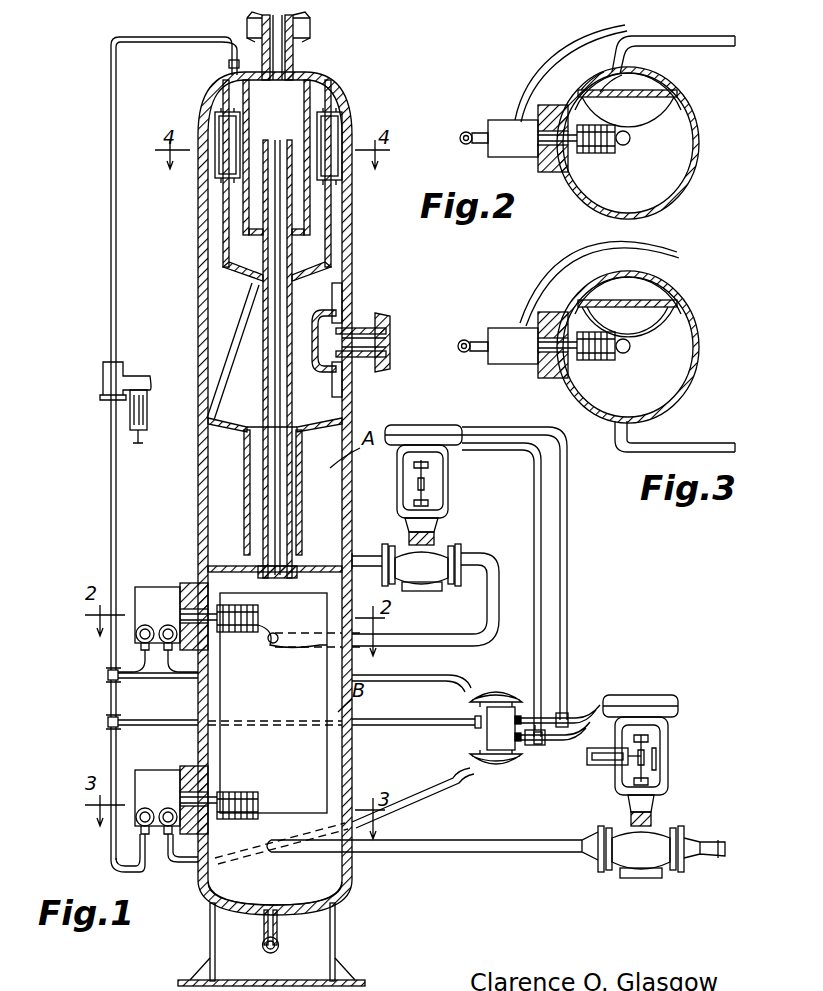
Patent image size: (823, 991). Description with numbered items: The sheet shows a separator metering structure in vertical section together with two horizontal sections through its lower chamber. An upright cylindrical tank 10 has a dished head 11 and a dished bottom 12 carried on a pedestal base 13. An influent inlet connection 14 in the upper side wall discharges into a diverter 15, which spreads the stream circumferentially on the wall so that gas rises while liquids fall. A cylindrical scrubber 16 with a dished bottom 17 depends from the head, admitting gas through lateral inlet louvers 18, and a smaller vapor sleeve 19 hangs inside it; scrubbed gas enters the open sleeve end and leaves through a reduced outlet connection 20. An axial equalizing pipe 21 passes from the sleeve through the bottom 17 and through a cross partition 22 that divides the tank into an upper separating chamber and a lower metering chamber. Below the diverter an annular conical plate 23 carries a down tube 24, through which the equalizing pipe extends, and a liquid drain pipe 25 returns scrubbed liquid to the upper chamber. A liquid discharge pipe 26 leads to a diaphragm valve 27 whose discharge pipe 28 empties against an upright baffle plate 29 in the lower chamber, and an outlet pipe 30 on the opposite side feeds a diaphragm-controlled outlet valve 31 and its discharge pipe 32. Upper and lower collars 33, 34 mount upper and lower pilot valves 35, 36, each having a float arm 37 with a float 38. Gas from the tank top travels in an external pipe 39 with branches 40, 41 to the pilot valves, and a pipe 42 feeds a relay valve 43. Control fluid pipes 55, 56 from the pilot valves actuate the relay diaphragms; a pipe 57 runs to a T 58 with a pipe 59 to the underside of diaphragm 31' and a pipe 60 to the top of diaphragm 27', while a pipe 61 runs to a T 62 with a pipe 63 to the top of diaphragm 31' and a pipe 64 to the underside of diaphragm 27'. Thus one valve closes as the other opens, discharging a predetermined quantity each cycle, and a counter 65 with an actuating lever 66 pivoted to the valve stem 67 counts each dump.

In FIG. 1, the tank 10 is at (345, 305).
In FIG. 2, the tank 10 is at (700, 132).
In FIG. 3, the tank 10 is at (700, 340).
In FIG. 1, the head 11 is at (318, 79).
In FIG. 1, the bottom 12 is at (230, 905).
In FIG. 2, the bottom 12 is at (672, 172).
In FIG. 3, the bottom 12 is at (680, 364).
In FIG. 1, the base 13 is at (337, 932).
In FIG. 1, the influent inlet connection 14 is at (383, 343).
In FIG. 1, the diverter 15 is at (313, 362).
In FIG. 1, the scrubber 16 is at (328, 233).
In FIG. 1, the dished bottom 17 is at (305, 276).
In FIG. 1, the inlet louvers 18 is at (228, 128).
In FIG. 1, the vapor sleeve 19 is at (307, 140).
In FIG. 1, the outlet connection 20 is at (283, 60).
In FIG. 1, the equalizing pipe 21 is at (272, 248).
In FIG. 1, the partition 22 is at (293, 570).
In FIG. 1, the conical plate 23 is at (300, 428).
In FIG. 1, the down tube 24 is at (246, 515).
In FIG. 1, the liquid drain pipe 25 is at (222, 352).
In FIG. 1, the liquid discharge pipe 26 is at (360, 558).
In FIG. 1, the diaphragm valve 27 is at (432, 518).
In FIG. 1, the diaphragm 27' is at (433, 417).
In FIG. 1, the discharge pipe 28 is at (495, 595).
In FIG. 2, the discharge pipe 28 is at (690, 46).
In FIG. 1, the baffle plate 29 is at (356, 645).
In FIG. 2, the baffle plate 29 is at (656, 98).
In FIG. 3, the baffle plate 29 is at (660, 308).
In FIG. 1, the outlet pipe 30 is at (420, 843).
In FIG. 3, the outlet pipe 30 is at (668, 442).
In FIG. 1, the outlet valve 31 is at (652, 836).
In FIG. 1, the diaphragm 31' is at (640, 727).
In FIG. 1, the discharge pipe 32 is at (702, 846).
In FIG. 1, the upper collar 33 is at (205, 641).
In FIG. 2, the upper collar 33 is at (548, 168).
In FIG. 1, the lower collar 34 is at (205, 778).
In FIG. 3, the lower collar 34 is at (552, 382).
In FIG. 1, the upper pilot valve 35 is at (157, 600).
In FIG. 2, the upper pilot valve 35 is at (500, 118).
In FIG. 1, the lower pilot valve 36 is at (160, 790).
In FIG. 3, the lower pilot valve 36 is at (502, 332).
In FIG. 1, the float arm 37 is at (212, 598).
In FIG. 1, the float 38 is at (252, 615).
In FIG. 2, the float 38 is at (594, 155).
In FIG. 3, the float 38 is at (600, 362).
In FIG. 1, the external pipe 39 is at (112, 452).
In FIG. 2, the external pipe 39 is at (460, 132).
In FIG. 1, the branch 40 is at (140, 672).
In FIG. 1, the branch 41 is at (114, 872).
In FIG. 3, the branch 41 is at (460, 350).
In FIG. 1, the pipe 42 is at (192, 722).
In FIG. 1, the relay valve 43 is at (495, 735).
In FIG. 1, the control fluid pipe 55 is at (405, 680).
In FIG. 2, the control fluid pipe 55 is at (565, 45).
In FIG. 1, the control fluid pipe 56 is at (442, 790).
In FIG. 3, the control fluid pipe 56 is at (558, 262).
In FIG. 1, the pipe 57 is at (528, 716).
In FIG. 1, the T 58 is at (564, 712).
In FIG. 1, the pipe 59 is at (587, 720).
In FIG. 1, the pipe 60 is at (568, 588).
In FIG. 1, the pipe 61 is at (522, 744).
In FIG. 1, the T 62 is at (540, 748).
In FIG. 1, the pipe 63 is at (578, 730).
In FIG. 1, the pipe 64 is at (535, 636).
In FIG. 1, the counter 65 is at (620, 768).
In FIG. 1, the actuating lever 66 is at (655, 770).
In FIG. 1, the stem 67 is at (655, 748).